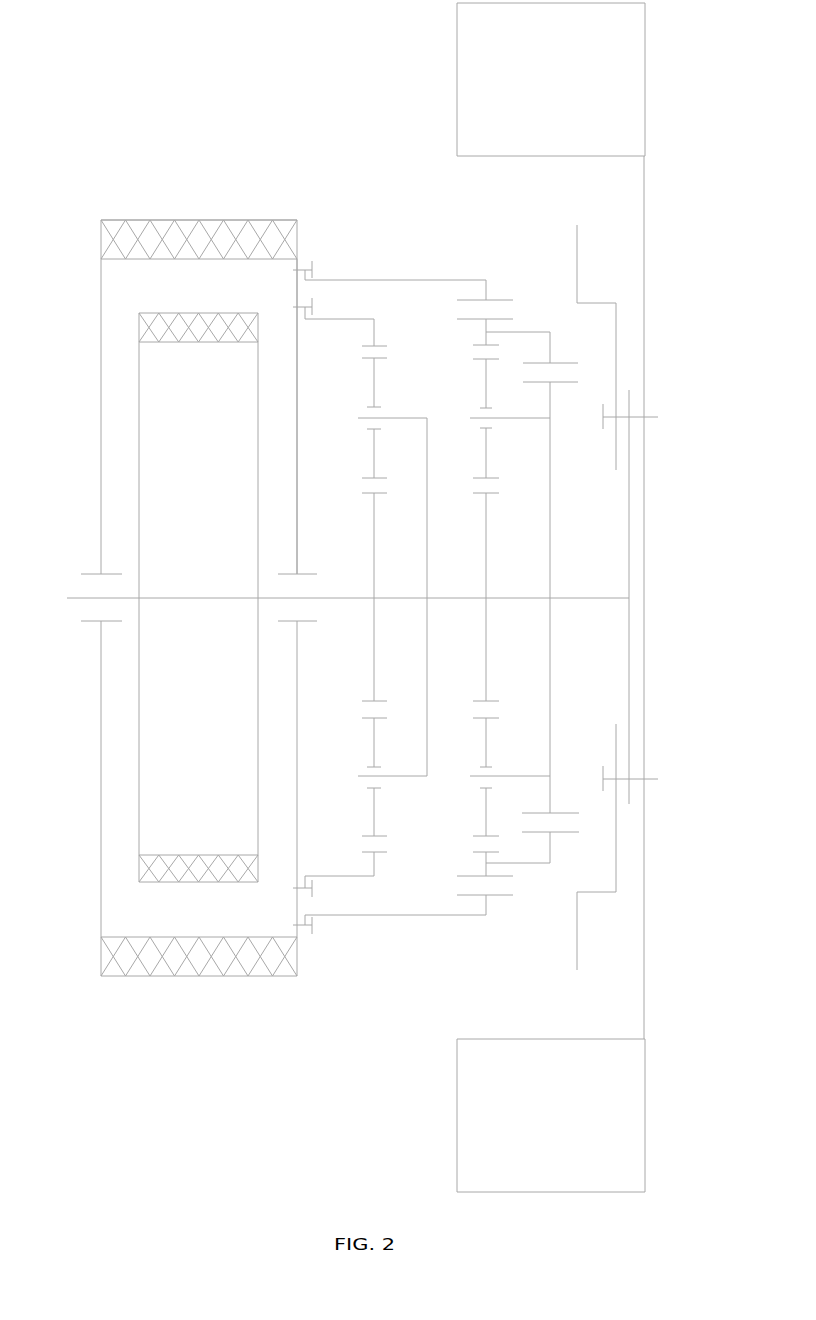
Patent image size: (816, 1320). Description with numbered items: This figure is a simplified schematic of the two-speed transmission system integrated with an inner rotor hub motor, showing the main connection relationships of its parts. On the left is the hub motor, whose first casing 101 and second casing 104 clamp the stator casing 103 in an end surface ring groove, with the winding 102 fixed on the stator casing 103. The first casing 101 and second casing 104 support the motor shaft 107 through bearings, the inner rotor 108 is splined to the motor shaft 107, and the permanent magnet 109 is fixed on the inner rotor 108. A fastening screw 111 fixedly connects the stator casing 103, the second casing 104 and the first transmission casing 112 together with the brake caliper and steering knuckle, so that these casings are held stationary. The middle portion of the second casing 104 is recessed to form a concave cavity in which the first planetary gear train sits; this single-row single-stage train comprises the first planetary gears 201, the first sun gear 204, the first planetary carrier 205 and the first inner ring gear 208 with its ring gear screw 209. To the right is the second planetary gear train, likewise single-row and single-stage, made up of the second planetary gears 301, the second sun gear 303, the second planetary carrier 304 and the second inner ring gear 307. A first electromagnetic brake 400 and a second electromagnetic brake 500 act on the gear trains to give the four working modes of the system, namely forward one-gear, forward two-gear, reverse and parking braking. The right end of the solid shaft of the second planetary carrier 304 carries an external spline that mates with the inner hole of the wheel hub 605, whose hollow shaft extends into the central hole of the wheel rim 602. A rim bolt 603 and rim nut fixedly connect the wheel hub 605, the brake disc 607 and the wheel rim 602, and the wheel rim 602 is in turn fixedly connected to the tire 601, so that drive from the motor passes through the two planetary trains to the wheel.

The first casing 101 is at (102, 489).
The winding 102 is at (139, 241).
The stator casing 103 is at (163, 219).
The second casing 104 is at (297, 392).
The motor shaft 107 is at (105, 597).
The inner rotor 108 is at (193, 400).
The permanent magnet 109 is at (163, 327).
The fastening screw 111 is at (312, 269).
The first transmission casing 112 is at (405, 279).
The first planetary gears 201 is at (376, 382).
The first sun gear 204 is at (374, 535).
The first planetary carrier 205 is at (409, 420).
The first inner ring gear 208 is at (381, 346).
The ring gear screw 209 is at (312, 307).
The second planetary gears 301 is at (486, 392).
The second sun gear 303 is at (486, 518).
The second planetary carrier 304 is at (528, 420).
The second inner ring gear 307 is at (483, 345).
The first electromagnetic brake 400 is at (495, 318).
The second electromagnetic brake 500 is at (560, 382).
The tire 601 is at (600, 103).
The wheel rim 602 is at (644, 316).
The rim bolt 603 is at (603, 410).
The wheel hub 605 is at (629, 490).
The brake disc 607 is at (576, 243).